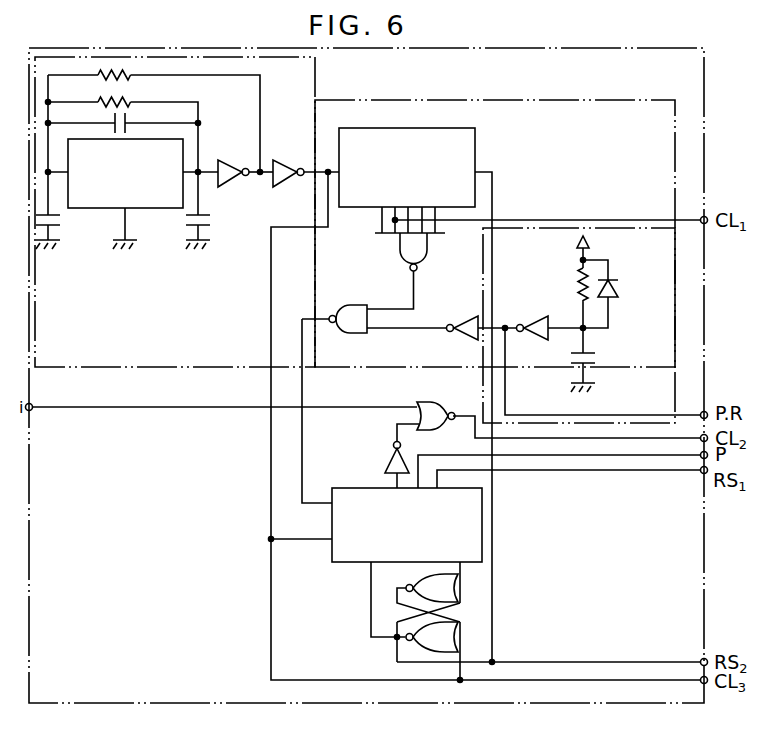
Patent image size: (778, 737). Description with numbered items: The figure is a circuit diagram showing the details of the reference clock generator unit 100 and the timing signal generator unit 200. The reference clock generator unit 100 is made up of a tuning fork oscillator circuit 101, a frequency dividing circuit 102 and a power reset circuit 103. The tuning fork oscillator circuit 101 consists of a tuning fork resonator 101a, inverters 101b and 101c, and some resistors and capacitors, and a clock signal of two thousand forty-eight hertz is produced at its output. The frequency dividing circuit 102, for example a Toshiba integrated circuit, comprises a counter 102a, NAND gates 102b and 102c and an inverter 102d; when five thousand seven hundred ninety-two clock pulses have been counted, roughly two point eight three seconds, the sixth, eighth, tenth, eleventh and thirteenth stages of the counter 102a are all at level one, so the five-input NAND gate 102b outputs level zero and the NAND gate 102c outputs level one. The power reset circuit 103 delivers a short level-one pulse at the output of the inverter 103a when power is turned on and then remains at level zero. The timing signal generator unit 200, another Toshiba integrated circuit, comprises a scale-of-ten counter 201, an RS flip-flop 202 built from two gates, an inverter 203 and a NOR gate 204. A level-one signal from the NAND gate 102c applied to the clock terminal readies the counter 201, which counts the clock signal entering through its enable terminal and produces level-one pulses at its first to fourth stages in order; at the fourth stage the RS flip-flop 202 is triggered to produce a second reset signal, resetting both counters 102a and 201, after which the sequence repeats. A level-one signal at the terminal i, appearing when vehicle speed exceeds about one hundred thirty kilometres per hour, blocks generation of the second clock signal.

The reference clock generator unit 100 is at (596, 47).
The tuning fork oscillator circuit 101 is at (317, 89).
The tuning fork resonator 101a is at (169, 209).
The inverter 101b is at (224, 160).
The inverter 101c is at (281, 160).
The frequency dividing circuit 102 is at (565, 100).
The counter 102a is at (478, 150).
The five-input NAND gate 102b is at (428, 247).
The NAND gate 102c is at (352, 305).
The inverter 102d is at (466, 318).
The power reset circuit 103 is at (676, 313).
The inverter 103a is at (539, 318).
The timing signal generator unit 200 is at (704, 607).
The scale-of-10 counter 201 is at (373, 488).
The RS flip-flop 202 is at (468, 612).
The inverter 203 is at (384, 460).
The NOR gate 204 is at (428, 403).